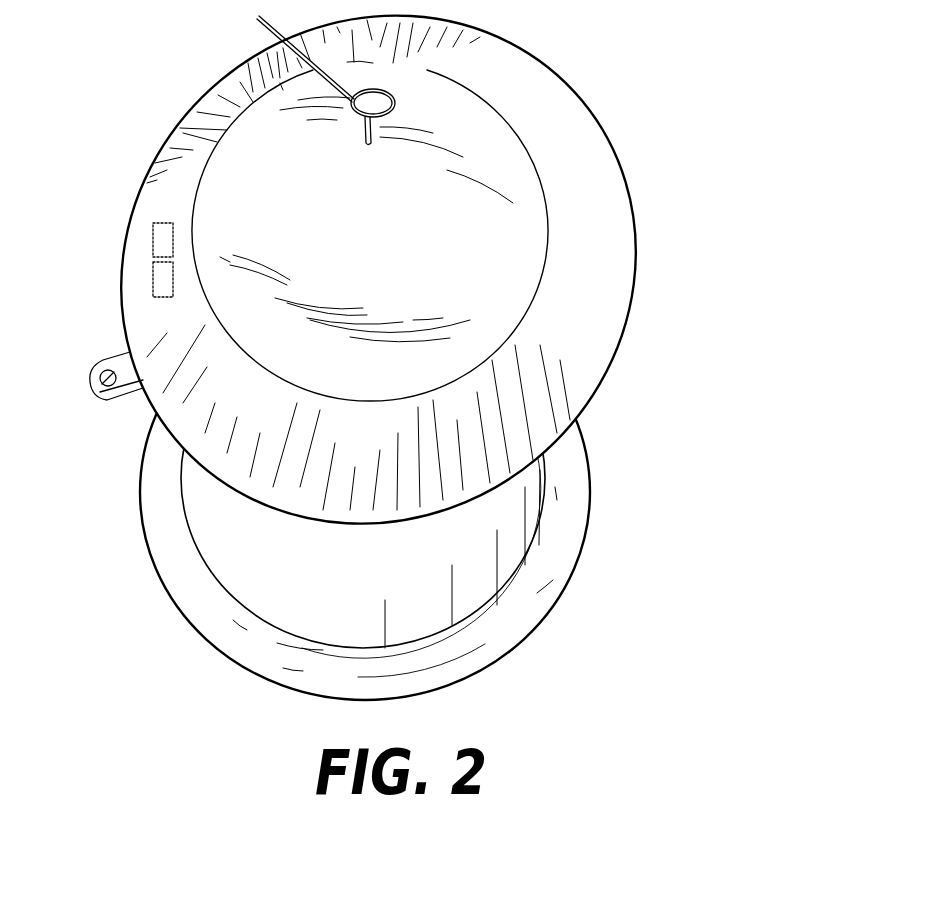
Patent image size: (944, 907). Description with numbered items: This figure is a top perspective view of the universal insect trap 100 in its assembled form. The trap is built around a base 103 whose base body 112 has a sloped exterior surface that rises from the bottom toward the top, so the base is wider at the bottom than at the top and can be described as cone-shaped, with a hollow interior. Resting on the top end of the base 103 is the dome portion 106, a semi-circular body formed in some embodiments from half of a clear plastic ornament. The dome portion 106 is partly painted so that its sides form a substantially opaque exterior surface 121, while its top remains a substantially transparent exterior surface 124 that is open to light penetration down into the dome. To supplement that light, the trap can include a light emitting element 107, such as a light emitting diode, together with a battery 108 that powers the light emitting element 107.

The universal insect trap 100 is at (439, 362).
The base 103 is at (370, 492).
The dome portion 106 is at (379, 314).
The light emitting element 107 is at (153, 240).
The battery 108 is at (153, 283).
The base body 112 is at (192, 547).
The opaque exterior surface 121 is at (566, 252).
The transparent exterior surface 124 is at (356, 228).